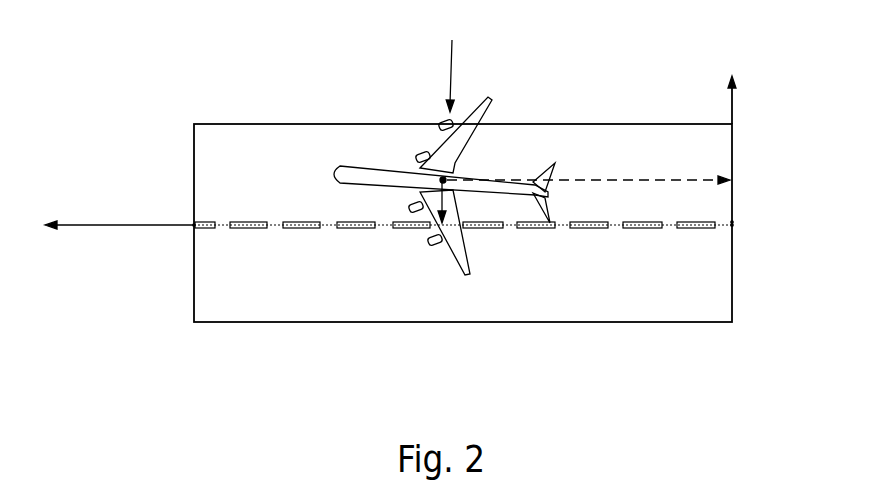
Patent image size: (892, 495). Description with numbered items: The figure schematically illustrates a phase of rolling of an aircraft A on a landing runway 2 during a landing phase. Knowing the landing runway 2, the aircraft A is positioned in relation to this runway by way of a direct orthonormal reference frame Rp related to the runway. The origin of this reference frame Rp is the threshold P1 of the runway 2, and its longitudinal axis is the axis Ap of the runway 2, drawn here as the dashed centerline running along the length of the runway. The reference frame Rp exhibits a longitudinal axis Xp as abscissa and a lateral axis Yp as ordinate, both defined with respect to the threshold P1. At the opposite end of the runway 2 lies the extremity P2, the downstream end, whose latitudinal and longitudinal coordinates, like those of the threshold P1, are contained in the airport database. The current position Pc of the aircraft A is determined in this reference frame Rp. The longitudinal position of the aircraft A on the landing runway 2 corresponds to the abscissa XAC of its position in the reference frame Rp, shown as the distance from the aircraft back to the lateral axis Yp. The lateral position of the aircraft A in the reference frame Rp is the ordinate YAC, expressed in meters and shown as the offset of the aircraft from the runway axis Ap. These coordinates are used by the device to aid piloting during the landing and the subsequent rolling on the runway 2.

The landing runway 2 is at (558, 323).
The aircraft A is at (370, 166).
The axis of the runway Ap is at (430, 275).
The current position Pc is at (452, 62).
The abscissa of the position of the aircraft XAC is at (568, 178).
The lateral position of the aircraft YAC is at (435, 213).
The longitudinal axis Xp is at (119, 206).
The lateral axis Yp is at (755, 100).
The threshold of the runway P1 is at (772, 256).
The extremity of the runway P2 is at (166, 171).
The reference frame Rp is at (798, 190).